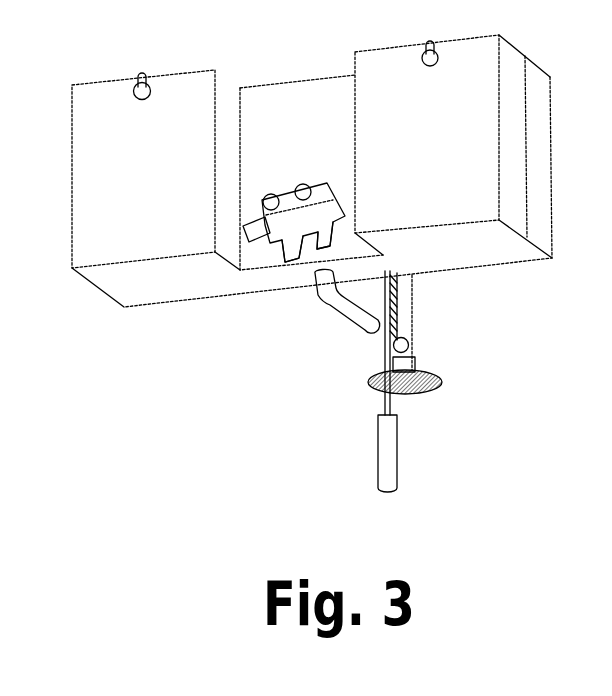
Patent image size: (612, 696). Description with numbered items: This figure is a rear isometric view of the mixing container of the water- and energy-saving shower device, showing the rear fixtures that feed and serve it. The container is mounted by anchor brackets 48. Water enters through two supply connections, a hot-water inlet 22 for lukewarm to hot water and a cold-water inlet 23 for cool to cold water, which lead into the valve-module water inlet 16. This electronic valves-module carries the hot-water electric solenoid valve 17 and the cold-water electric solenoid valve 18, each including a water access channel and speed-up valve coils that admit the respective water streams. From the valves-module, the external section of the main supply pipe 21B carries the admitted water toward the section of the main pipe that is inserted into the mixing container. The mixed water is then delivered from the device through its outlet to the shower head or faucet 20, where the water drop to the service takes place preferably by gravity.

The anchor brackets 48 is at (132, 82).
The valve-module water inlet 16 is at (277, 228).
The hot-water electric solenoid valve 17 is at (297, 178).
The cold-water electric solenoid valve 18 is at (271, 193).
The main pipe's section connected to the valves-module 21B is at (237, 226).
The hot-water inlet 22 is at (341, 240).
The cold-water inlet 23 is at (302, 252).
The shower head or faucet 20 is at (437, 380).